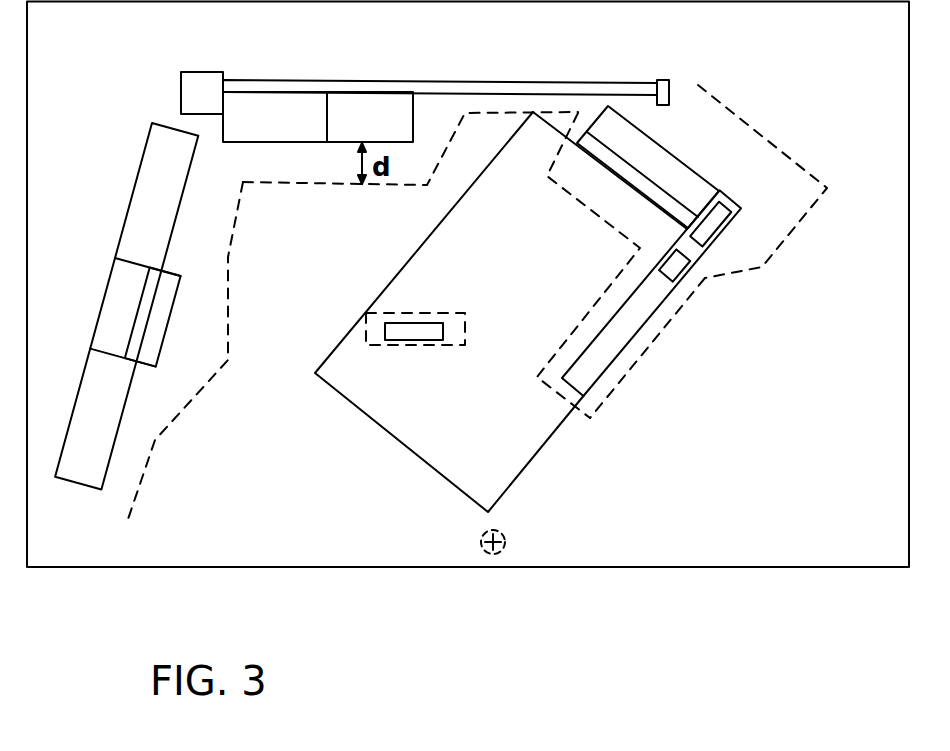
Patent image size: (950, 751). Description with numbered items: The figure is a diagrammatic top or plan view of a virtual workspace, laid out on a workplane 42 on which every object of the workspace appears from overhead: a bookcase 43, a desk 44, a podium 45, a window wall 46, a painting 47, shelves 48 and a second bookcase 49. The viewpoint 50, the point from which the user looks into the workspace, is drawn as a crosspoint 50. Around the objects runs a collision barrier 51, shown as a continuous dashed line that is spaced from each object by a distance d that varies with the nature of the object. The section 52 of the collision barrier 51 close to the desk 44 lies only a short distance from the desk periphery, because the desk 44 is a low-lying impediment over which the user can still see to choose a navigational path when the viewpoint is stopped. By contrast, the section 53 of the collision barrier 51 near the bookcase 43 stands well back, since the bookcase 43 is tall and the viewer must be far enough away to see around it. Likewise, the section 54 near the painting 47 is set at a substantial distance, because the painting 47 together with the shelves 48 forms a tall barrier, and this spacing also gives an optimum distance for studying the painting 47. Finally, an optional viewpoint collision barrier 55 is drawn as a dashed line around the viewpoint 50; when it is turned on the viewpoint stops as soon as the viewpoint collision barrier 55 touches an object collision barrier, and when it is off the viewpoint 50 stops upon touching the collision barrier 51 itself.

The workplane 42 is at (573, 532).
The bookcase 43 is at (670, 170).
The desk 44 is at (648, 305).
The podium 45 is at (410, 328).
The window wall 46 is at (492, 88).
The painting 47 is at (158, 315).
The shelves 48 is at (160, 237).
The bookcase 49 is at (277, 118).
The viewpoint 50 is at (505, 547).
The collision barrier 51 is at (807, 173).
The section of collision barrier 52 is at (623, 377).
The section of collision barrier 53 is at (603, 220).
The section of collision barrier 54 is at (235, 318).
The viewpoint collision barrier 55 is at (503, 535).